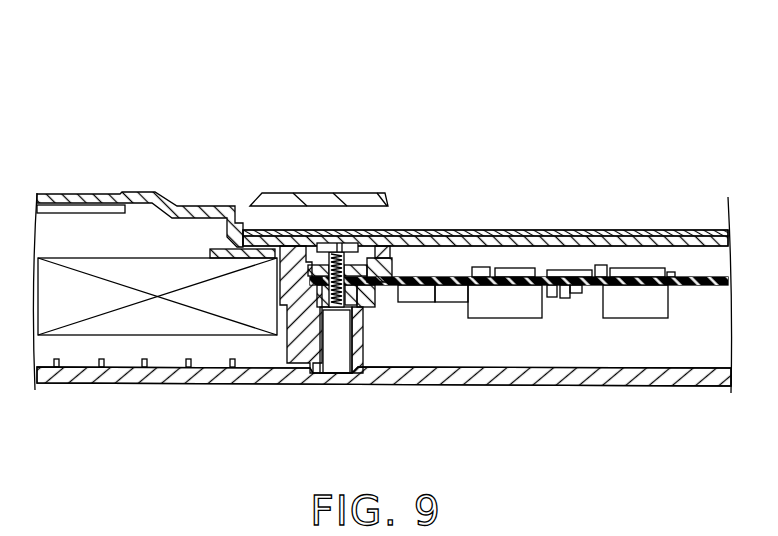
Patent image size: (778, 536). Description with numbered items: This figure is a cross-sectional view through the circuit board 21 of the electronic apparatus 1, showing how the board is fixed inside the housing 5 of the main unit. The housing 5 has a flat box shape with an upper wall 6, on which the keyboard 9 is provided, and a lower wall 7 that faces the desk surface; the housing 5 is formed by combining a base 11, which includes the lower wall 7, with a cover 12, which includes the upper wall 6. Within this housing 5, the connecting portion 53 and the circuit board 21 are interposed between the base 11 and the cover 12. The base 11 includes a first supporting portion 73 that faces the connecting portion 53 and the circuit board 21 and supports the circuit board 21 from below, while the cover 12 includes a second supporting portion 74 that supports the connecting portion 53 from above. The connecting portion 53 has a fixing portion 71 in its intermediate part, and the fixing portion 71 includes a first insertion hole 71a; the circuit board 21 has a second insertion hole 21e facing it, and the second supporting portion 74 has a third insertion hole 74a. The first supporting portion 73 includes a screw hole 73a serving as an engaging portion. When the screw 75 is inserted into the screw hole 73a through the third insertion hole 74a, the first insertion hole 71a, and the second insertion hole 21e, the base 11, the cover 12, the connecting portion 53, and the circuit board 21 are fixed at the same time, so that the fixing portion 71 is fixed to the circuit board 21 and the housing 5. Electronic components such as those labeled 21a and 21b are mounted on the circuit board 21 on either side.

The electronic apparatus 1 is at (724, 92).
The housing 5 is at (81, 188).
The upper wall 6 is at (685, 232).
The lower wall 7 is at (670, 376).
The keyboard 9 is at (536, 231).
The base 11 is at (610, 375).
The cover 12 is at (634, 238).
The circuit board 21 is at (453, 270).
The electronic component 21a is at (585, 290).
The electronic component 21b is at (592, 265).
The second insertion hole 21e is at (368, 305).
The connecting portion 53 is at (394, 254).
The fixing portion 71 is at (383, 254).
The first insertion hole 71a is at (362, 288).
The first supporting portion 73 is at (310, 383).
The screw hole 73a is at (352, 380).
The second supporting portion 74 is at (309, 244).
The third insertion hole 74a is at (362, 262).
The screw 75 is at (330, 264).